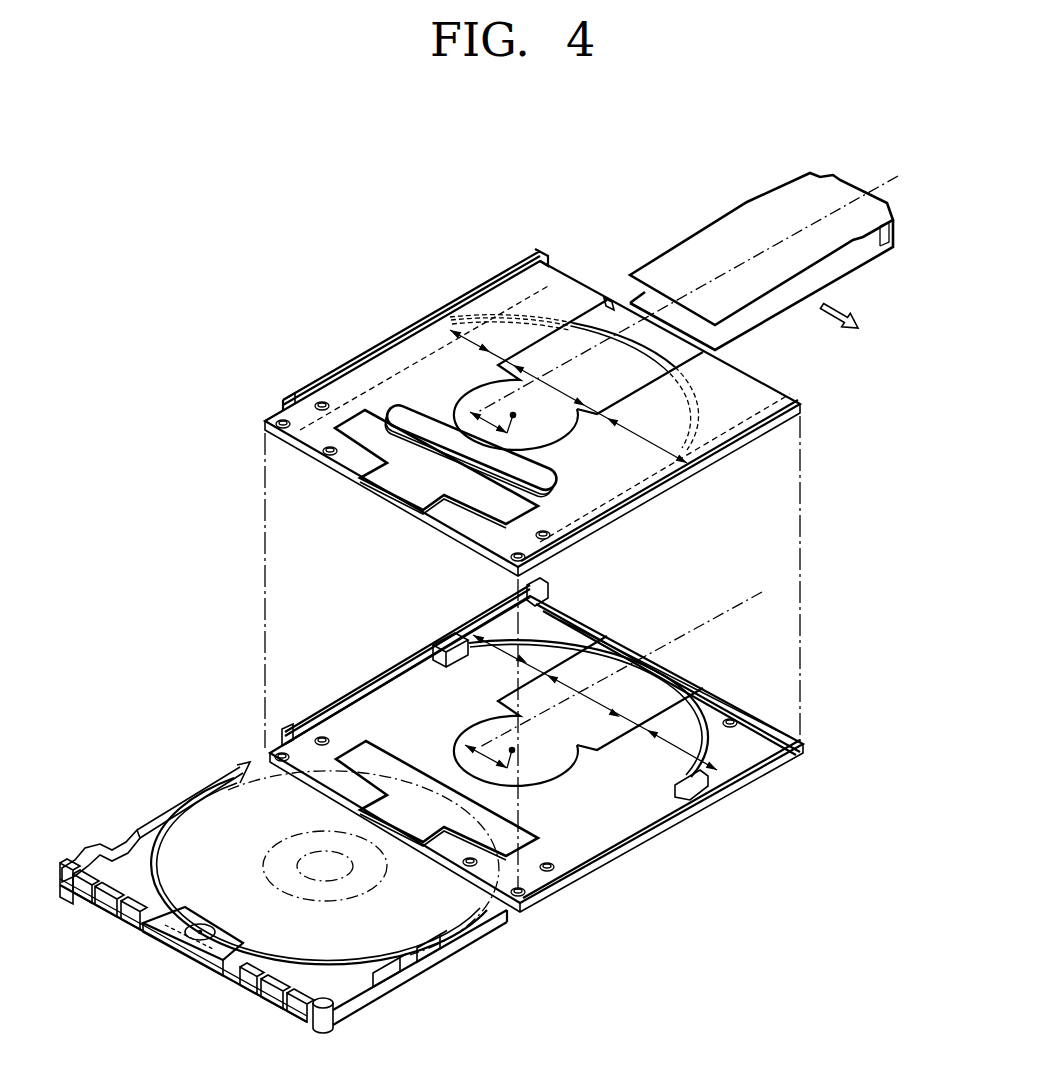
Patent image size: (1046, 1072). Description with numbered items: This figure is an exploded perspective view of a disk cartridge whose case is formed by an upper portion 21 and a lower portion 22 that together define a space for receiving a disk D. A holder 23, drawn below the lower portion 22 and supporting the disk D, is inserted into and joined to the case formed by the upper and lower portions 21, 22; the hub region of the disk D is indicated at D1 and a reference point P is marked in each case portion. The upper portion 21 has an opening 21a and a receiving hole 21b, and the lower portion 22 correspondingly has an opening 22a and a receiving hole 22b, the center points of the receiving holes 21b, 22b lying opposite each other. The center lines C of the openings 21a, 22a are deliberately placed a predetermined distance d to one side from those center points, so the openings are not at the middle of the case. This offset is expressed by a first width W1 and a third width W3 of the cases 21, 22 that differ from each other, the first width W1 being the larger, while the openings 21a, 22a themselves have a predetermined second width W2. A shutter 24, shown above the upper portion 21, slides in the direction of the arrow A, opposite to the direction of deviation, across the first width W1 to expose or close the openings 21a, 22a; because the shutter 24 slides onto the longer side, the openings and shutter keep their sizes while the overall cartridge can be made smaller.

The upper portion of the case 21 is at (377, 365).
The opening 21a is at (568, 338).
The receiving hole 21b is at (543, 427).
The lower portion of the case 22 is at (663, 822).
The opening 22a is at (647, 690).
The receiving hole 22b is at (542, 766).
The holder 23 is at (188, 950).
The shutter 24 is at (732, 228).
The disk D is at (264, 777).
The center hole of disk D1 is at (283, 850).
The reference point P is at (513, 415).
The center line C is at (592, 524).
The arrow A is at (848, 327).
The first width W1 is at (663, 590).
The second width W2 is at (585, 551).
The third width W3 is at (503, 507).
The predetermined distance d is at (488, 593).